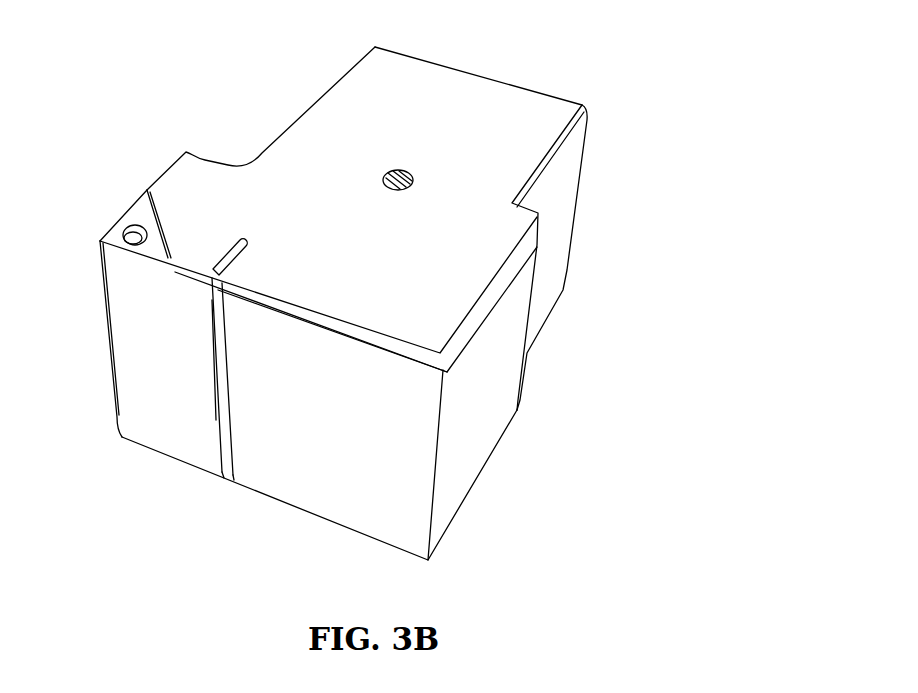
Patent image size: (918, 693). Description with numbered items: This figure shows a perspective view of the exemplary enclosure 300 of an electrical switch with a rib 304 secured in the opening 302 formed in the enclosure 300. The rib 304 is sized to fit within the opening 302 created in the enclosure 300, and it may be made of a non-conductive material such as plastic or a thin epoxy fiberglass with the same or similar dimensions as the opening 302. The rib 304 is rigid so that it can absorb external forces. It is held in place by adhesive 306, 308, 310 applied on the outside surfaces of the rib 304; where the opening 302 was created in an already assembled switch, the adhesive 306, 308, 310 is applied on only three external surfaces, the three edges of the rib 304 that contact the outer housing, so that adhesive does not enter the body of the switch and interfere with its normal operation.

The enclosure 300 is at (415, 288).
The opening 302 is at (232, 242).
The rib 304 is at (230, 473).
The adhesive 306 is at (242, 233).
The adhesive 308 is at (210, 360).
The adhesive 310 is at (222, 478).